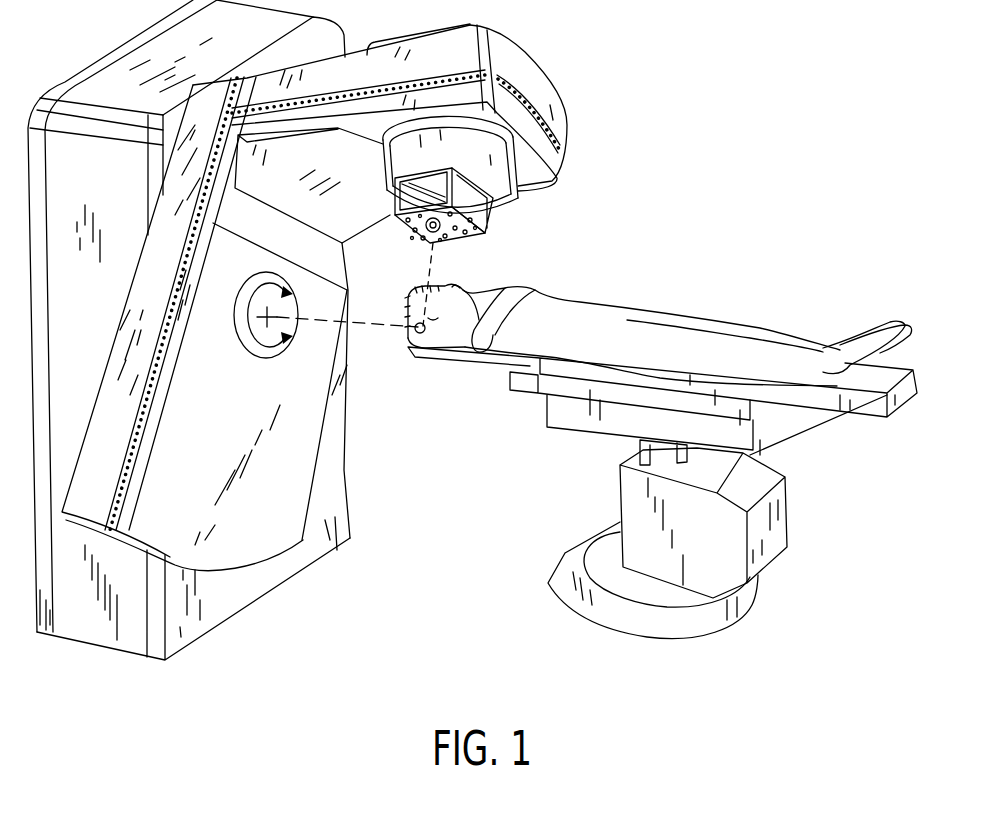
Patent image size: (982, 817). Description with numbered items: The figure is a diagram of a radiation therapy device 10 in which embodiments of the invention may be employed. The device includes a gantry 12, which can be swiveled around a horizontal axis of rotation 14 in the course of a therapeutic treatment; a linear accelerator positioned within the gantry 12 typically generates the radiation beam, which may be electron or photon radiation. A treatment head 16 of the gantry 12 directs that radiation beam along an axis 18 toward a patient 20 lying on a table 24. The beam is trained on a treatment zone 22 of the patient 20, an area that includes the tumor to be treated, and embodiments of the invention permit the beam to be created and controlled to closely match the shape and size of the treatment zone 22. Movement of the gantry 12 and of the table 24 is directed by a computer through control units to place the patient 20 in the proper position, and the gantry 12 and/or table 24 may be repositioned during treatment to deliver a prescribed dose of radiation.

The radiation therapy device 10 is at (752, 74).
The gantry 12 is at (93, 462).
The horizontal axis of rotation 14 is at (395, 327).
The treatment head 16 is at (505, 193).
The axis 18 is at (425, 258).
The patient 20 is at (583, 312).
The treatment zone 22 is at (418, 334).
The table 24 is at (588, 422).